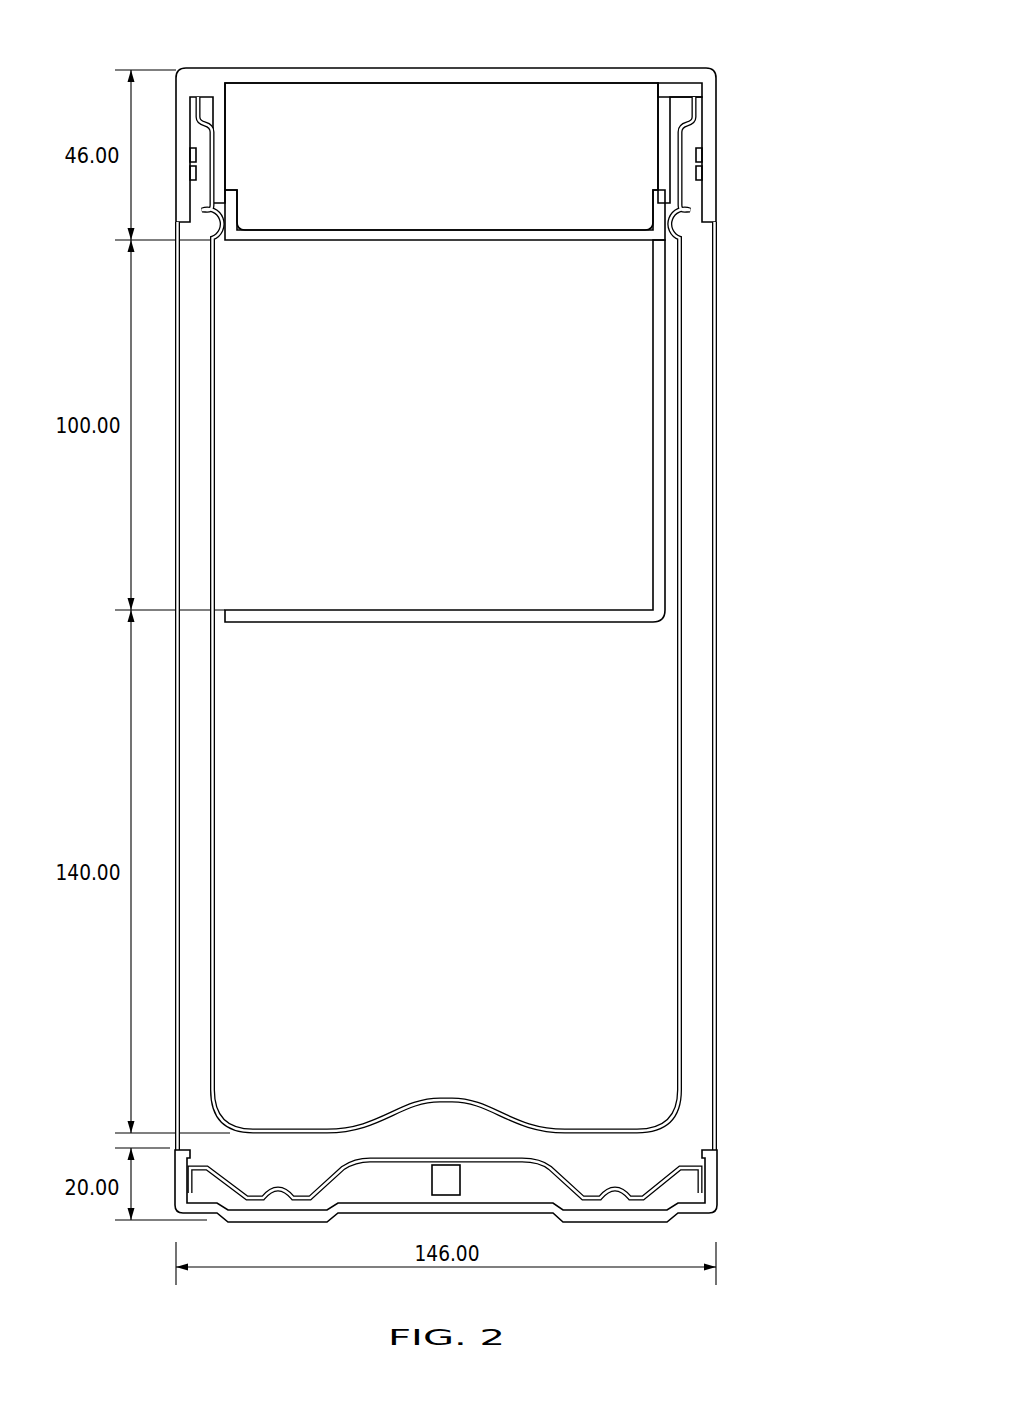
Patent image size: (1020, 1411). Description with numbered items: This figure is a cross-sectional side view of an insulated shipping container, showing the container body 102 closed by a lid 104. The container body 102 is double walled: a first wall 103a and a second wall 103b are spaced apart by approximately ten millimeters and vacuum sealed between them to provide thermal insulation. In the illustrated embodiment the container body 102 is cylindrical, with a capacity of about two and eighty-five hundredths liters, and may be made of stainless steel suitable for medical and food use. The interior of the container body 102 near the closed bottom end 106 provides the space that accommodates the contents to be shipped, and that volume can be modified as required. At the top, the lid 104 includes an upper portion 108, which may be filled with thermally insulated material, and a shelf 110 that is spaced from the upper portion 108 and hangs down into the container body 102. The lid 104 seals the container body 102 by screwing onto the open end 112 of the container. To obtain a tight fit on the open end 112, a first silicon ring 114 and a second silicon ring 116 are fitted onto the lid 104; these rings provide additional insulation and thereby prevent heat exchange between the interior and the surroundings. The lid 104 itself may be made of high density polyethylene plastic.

The container body 102 is at (497, 581).
The first wall 103a is at (680, 803).
The second wall 103b is at (715, 431).
The lid 104 is at (310, 70).
The bottom end 106 is at (633, 1220).
The upper portion 108 is at (370, 130).
The shelf 110 is at (565, 622).
The open end 112 is at (697, 93).
The first silicon ring 114 is at (673, 95).
The second silicon ring 116 is at (670, 198).